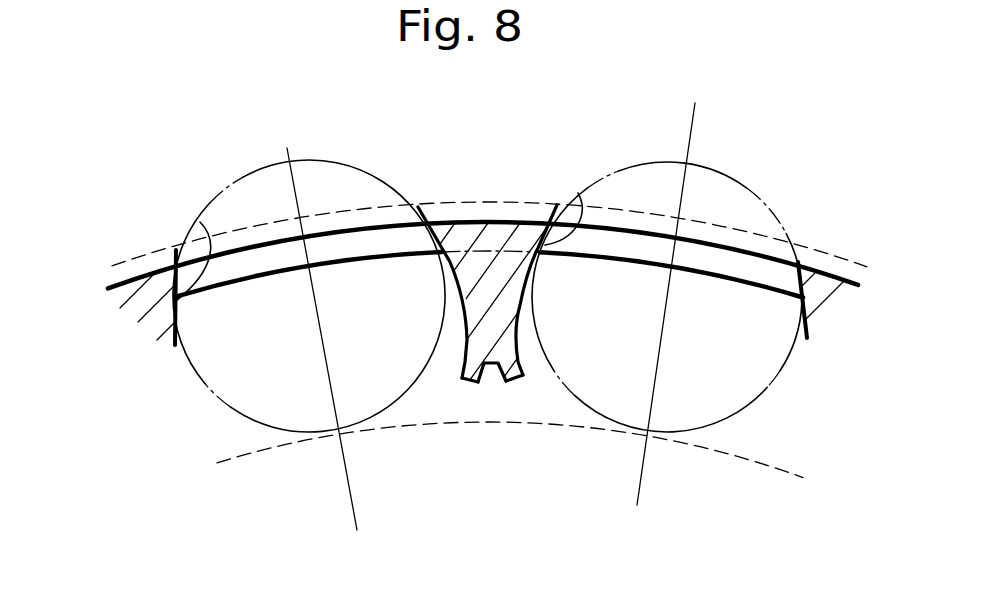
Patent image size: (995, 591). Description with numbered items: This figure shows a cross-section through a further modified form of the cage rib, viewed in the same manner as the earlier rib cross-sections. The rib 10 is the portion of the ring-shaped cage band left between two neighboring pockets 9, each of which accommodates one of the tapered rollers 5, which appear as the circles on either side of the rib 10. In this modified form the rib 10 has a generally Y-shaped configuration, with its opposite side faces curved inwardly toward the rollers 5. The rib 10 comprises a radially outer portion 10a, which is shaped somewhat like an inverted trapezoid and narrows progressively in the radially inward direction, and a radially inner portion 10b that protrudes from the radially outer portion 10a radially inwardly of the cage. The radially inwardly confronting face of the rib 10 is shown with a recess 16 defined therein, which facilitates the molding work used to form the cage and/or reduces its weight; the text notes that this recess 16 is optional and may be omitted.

The tapered roller 5 is at (243, 178).
The pocket 9 is at (200, 222).
The rib 10 is at (488, 307).
The radially outer portion 10a is at (465, 266).
The radially inner portion 10b is at (460, 357).
The recess 16 is at (495, 377).